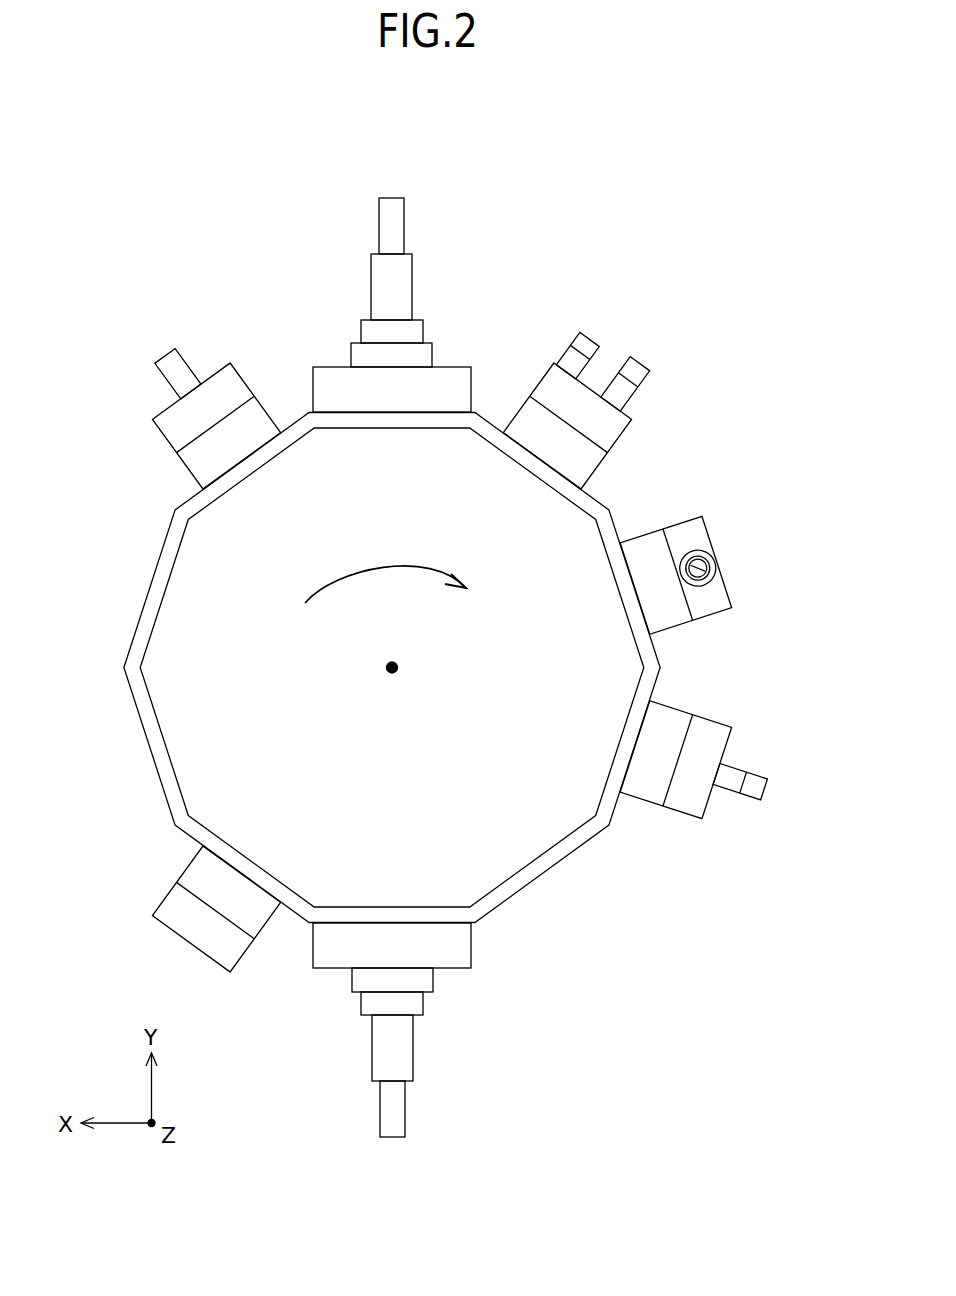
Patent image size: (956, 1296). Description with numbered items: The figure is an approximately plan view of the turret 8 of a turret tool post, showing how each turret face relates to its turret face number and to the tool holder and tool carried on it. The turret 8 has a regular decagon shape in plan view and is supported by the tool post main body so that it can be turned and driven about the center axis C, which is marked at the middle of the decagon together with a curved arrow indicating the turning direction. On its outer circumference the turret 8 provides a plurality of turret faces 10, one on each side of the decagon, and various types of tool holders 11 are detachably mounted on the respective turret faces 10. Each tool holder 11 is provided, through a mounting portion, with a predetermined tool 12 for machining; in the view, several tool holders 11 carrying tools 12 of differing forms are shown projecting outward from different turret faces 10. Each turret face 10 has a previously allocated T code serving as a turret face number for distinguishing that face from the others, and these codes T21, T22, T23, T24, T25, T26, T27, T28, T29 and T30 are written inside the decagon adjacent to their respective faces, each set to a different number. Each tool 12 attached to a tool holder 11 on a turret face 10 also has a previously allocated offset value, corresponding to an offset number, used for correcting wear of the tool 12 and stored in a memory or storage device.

The turret 8 is at (655, 331).
The turret faces 10 is at (548, 457).
The tool holders 11 is at (453, 367).
The tool 12 is at (405, 217).
The center axis C is at (386, 668).
The T code T21 is at (506, 509).
The T code T22 is at (570, 602).
The T code T23 is at (570, 730).
The T code T24 is at (517, 824).
The T code T25 is at (391, 874).
The T code T26 is at (273, 824).
The T code T27 is at (211, 730).
The T code T28 is at (217, 602).
The T code T29 is at (287, 504).
The T code T30 is at (393, 467).